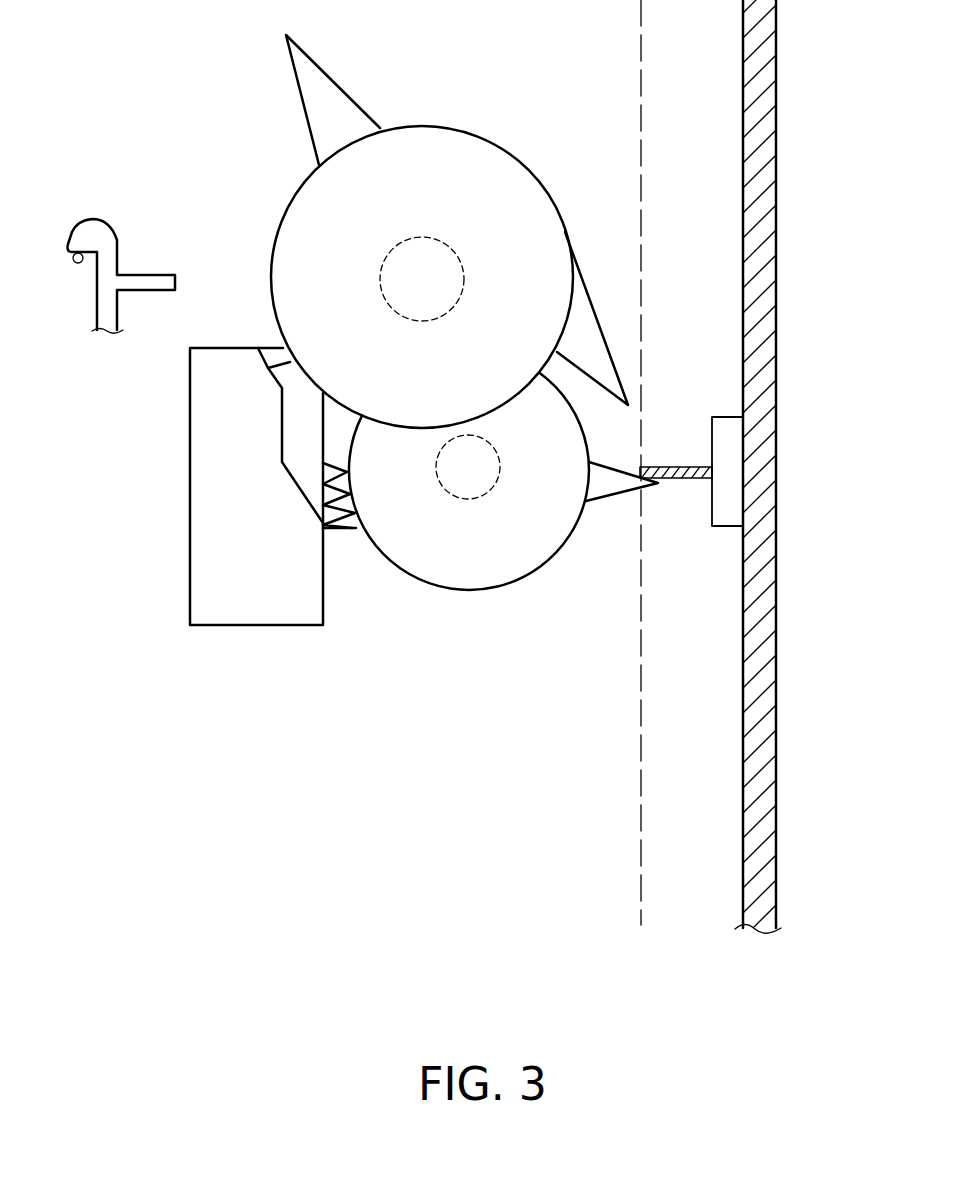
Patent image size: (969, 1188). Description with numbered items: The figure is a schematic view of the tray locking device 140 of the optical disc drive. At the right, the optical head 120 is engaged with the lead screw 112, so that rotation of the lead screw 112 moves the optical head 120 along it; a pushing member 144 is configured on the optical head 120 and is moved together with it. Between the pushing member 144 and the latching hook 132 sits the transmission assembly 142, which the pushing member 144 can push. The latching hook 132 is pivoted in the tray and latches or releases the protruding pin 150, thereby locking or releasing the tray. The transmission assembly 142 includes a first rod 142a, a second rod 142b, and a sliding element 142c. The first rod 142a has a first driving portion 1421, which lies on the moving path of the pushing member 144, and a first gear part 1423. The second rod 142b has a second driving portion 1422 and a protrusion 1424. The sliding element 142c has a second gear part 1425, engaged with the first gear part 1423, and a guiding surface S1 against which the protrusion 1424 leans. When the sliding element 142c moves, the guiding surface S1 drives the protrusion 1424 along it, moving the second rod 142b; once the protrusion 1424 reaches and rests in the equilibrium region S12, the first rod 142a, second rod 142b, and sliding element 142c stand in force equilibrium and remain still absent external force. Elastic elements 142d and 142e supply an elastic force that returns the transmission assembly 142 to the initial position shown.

The lead screw 112 is at (767, 200).
The optical head 120 is at (722, 505).
The latching hook 132 is at (90, 228).
The tray locking device 140 is at (591, 640).
The transmission assembly 142 is at (421, 111).
The first rod 142a is at (470, 585).
The second rod 142b is at (538, 190).
The sliding element 142c is at (197, 558).
The elastic element 142d is at (460, 500).
The elastic element 142e is at (380, 265).
The pushing member 144 is at (660, 470).
The protruding pin 150 is at (78, 265).
The first driving portion 1421 is at (610, 488).
The second driving portion 1422 is at (617, 382).
The first gear part 1423 is at (353, 530).
The protrusion 1424 is at (277, 360).
The second gear part 1425 is at (333, 530).
The guiding surface S1 is at (284, 394).
The equilibrium region S12 is at (280, 437).